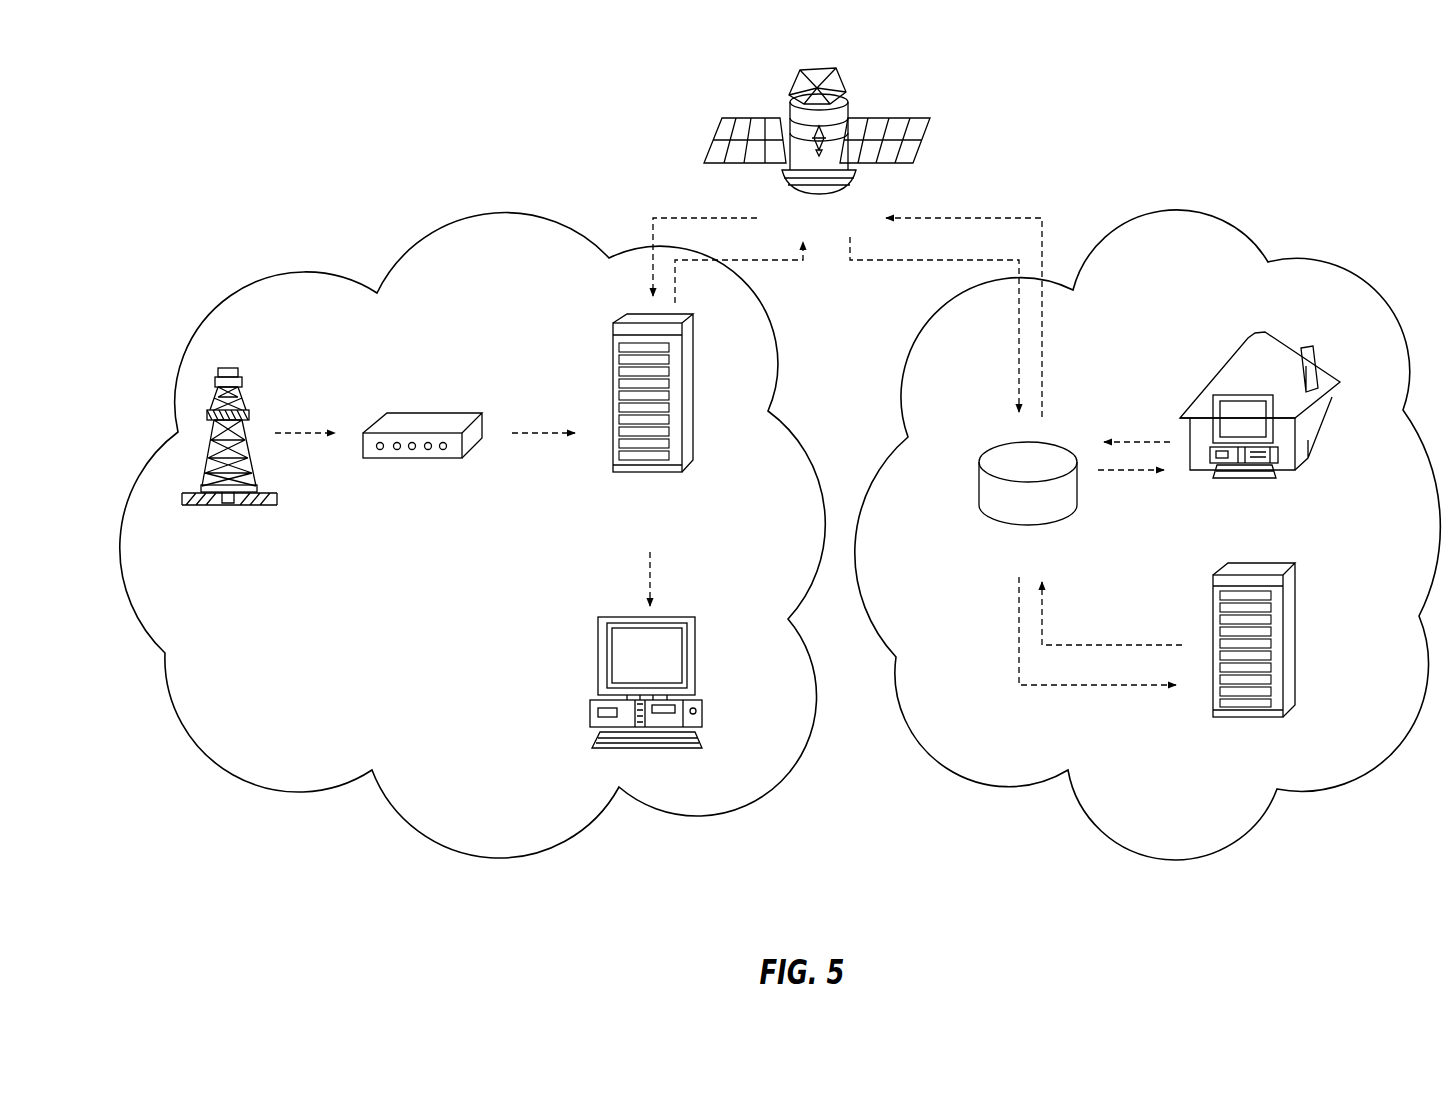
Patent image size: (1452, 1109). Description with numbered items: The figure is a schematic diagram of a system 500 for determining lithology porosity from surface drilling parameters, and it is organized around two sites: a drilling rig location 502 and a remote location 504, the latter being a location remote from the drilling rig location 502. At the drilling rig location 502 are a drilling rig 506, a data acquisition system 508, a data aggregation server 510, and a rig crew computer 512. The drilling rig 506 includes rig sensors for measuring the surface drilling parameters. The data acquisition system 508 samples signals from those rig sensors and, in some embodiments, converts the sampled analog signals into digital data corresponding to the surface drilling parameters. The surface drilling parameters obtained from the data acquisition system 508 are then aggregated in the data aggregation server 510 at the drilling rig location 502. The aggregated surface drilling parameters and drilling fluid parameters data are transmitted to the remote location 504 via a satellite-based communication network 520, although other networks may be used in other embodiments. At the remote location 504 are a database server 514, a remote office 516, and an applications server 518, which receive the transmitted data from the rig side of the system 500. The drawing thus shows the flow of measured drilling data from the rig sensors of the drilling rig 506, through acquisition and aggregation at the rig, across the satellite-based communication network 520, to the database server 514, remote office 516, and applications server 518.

The system 500 is at (258, 119).
The drilling rig location 502 is at (264, 760).
The remote location 504 is at (976, 760).
The drilling rig 506 is at (230, 367).
The data acquisition system 508 is at (436, 413).
The data aggregation server 510 is at (633, 313).
The rig crew computer 512 is at (615, 616).
The database server 514 is at (1003, 446).
The remote office 516 is at (1219, 378).
The applications server 518 is at (1235, 562).
The satellite-based communication network 520 is at (732, 118).